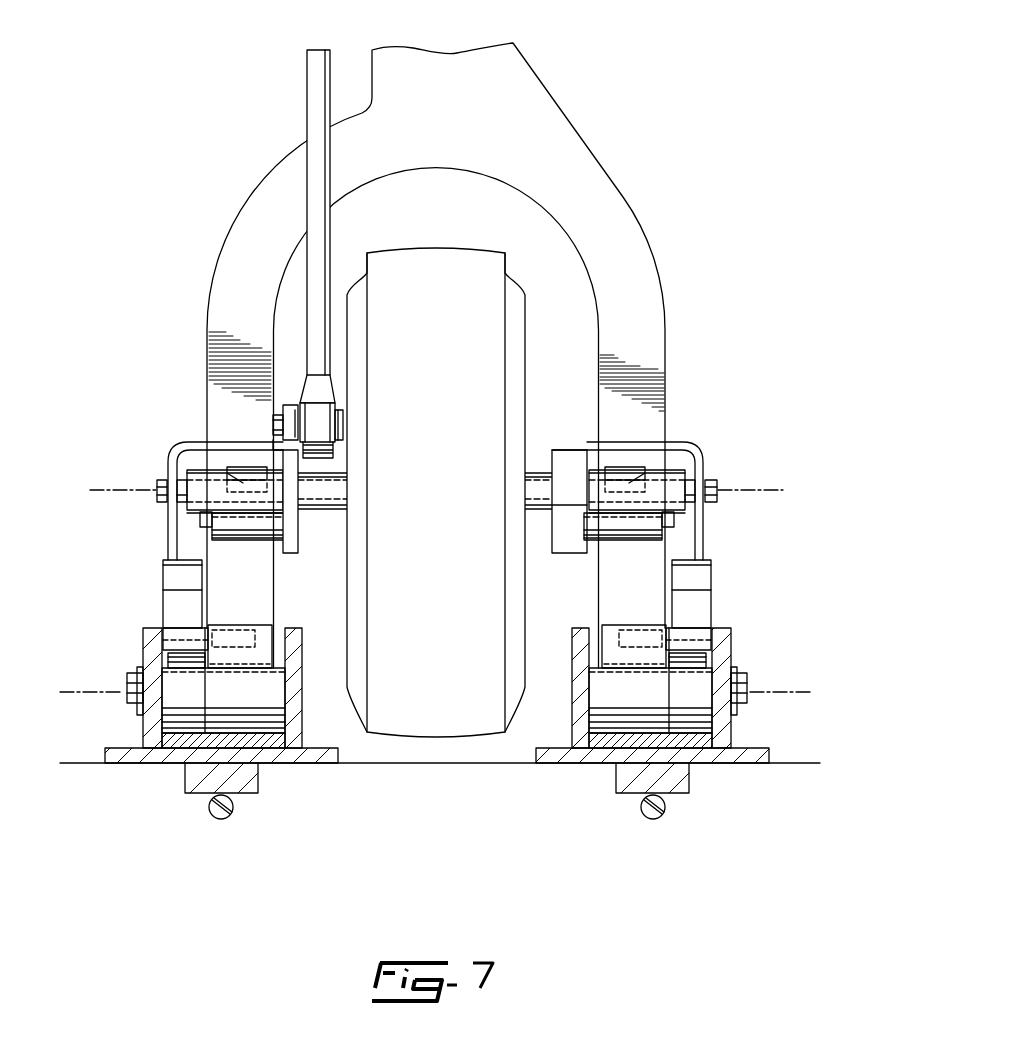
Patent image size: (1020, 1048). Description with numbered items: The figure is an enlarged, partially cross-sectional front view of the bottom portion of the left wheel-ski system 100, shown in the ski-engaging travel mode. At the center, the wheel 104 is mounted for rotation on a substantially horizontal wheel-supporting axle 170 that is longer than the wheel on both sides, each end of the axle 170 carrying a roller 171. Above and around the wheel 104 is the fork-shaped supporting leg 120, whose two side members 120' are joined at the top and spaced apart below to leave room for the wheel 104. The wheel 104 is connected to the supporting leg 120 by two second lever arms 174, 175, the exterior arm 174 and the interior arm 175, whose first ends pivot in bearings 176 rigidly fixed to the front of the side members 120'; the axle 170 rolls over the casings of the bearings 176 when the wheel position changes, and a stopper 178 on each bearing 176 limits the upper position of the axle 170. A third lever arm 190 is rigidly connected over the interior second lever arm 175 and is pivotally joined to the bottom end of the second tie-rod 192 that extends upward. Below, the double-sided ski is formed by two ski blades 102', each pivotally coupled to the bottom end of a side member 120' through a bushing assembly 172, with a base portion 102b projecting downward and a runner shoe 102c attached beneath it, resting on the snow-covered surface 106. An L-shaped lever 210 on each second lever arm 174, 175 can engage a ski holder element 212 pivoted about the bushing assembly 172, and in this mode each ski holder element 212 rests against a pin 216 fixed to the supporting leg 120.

The wheel-ski system 100 is at (182, 91).
The ski blades 102' is at (415, 751).
The base portion 102b is at (250, 783).
The runner shoe 102c is at (217, 812).
The wheel 104 is at (431, 228).
The surface 106 is at (83, 763).
The supporting leg 120 is at (452, 355).
The side members 120' is at (441, 347).
The wheel-supporting axle 170 is at (532, 467).
The roller 171 is at (203, 498).
The bushing assembly 172 is at (223, 715).
The second lever arm 174 is at (565, 462).
The second lever arm 175 is at (288, 458).
The bearing 176 is at (222, 530).
The stopper 178 is at (225, 470).
The third lever arm 190 is at (290, 415).
The second tie-rod 192 is at (308, 92).
The L-shaped lever 210 is at (172, 445).
The ski holder element 212 is at (170, 597).
The pin 216 is at (183, 633).